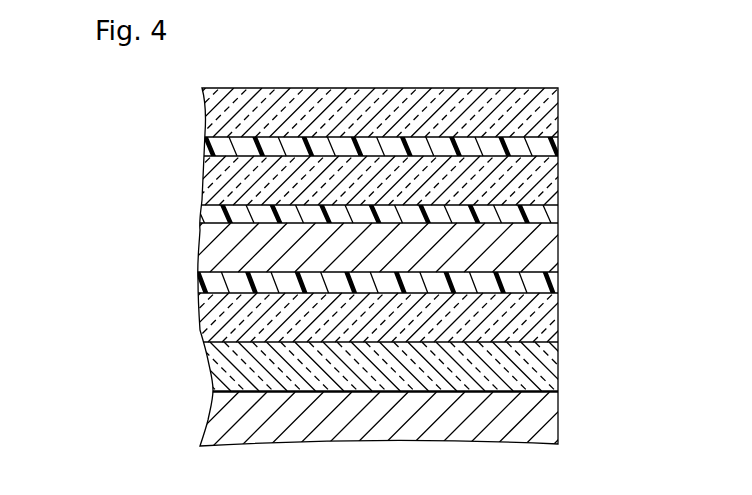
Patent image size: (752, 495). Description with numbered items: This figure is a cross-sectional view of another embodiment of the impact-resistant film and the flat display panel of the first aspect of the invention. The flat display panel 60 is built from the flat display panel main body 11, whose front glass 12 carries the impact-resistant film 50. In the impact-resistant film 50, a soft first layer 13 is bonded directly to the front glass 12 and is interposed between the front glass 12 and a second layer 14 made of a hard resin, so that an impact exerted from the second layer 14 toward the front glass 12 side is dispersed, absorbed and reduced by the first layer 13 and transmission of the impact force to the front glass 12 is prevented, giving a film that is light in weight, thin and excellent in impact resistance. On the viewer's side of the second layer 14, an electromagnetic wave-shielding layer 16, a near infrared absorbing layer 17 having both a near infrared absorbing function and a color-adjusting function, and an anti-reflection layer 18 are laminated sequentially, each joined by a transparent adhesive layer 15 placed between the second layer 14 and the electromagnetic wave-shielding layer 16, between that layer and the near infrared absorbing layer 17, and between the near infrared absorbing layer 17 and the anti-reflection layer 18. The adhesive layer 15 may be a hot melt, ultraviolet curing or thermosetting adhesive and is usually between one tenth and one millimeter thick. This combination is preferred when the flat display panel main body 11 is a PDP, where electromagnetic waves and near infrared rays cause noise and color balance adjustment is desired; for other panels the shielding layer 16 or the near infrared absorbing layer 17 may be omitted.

The flat display panel main body 11 is at (557, 420).
The front glass 12 is at (557, 382).
The first layer 13 is at (558, 358).
The second layer 14 is at (558, 318).
The adhesive layer 15 is at (558, 143).
The electromagnetic wave-shielding layer 16 is at (558, 247).
The near infrared absorption layer 17 is at (558, 181).
The anti-reflection layer 18 is at (391, 112).
The impact-resistant film 50 is at (414, 239).
The flat display panel 60 is at (443, 270).